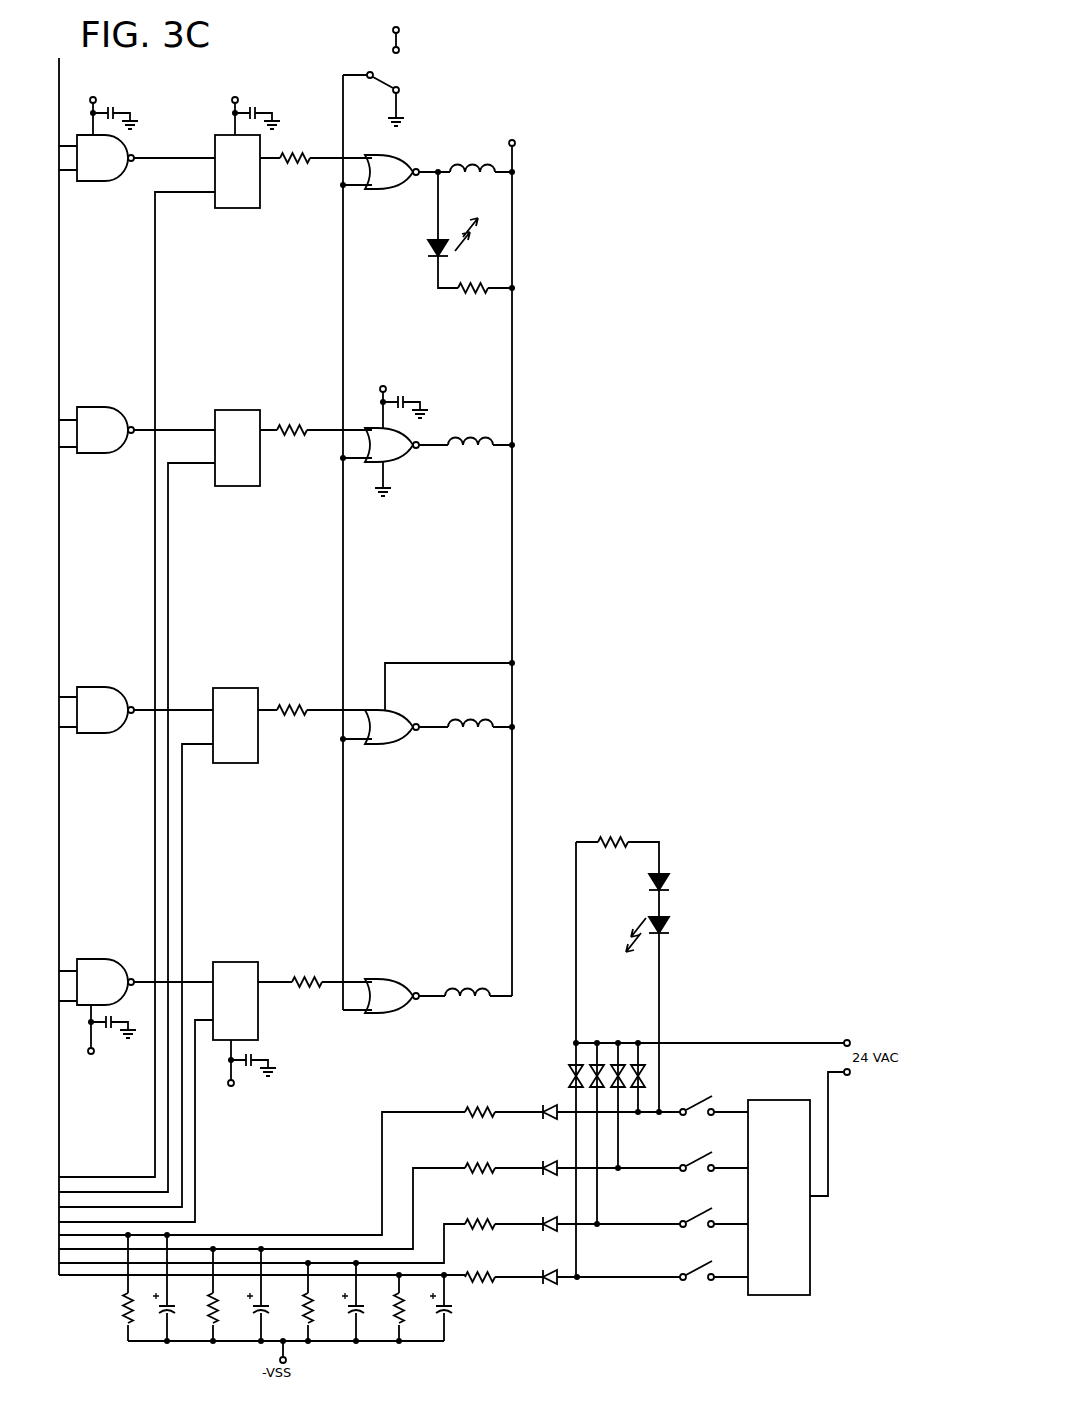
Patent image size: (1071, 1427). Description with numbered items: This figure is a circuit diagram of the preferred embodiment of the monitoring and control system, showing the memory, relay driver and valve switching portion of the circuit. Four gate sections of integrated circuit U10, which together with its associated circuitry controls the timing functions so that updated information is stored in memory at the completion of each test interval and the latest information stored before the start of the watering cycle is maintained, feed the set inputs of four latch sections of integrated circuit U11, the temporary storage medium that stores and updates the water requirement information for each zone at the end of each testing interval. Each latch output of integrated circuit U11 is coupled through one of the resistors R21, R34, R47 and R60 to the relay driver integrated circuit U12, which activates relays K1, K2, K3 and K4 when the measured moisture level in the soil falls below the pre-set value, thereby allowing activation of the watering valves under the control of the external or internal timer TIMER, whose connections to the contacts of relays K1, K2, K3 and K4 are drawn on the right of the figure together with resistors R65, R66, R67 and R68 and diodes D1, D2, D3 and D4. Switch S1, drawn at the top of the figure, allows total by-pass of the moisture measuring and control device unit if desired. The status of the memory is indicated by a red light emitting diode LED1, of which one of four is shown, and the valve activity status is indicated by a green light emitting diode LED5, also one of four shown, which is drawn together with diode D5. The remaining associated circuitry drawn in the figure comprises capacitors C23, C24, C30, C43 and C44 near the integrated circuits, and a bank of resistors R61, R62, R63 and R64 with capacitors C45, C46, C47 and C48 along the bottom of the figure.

The integrated circuit U10 is at (137, 583).
The integrated circuit U11 is at (180, 678).
The relay driver integrated circuit U12 is at (427, 583).
The capacitor C23 is at (110, 104).
The capacitor C24 is at (252, 107).
The capacitor C30 is at (400, 398).
The capacitor C43 is at (109, 1034).
The capacitor C44 is at (252, 1065).
The resistor 1K R21 is at (316, 144).
The resistor 1K R34 is at (316, 410).
The resistor 1K R47 is at (315, 690).
The resistor 1K R60 is at (315, 964).
The switch S1 is at (387, 68).
The relay K1 is at (583, 713).
The relay K2 is at (583, 822).
The relay K3 is at (583, 931).
The relay K4 is at (583, 1040).
The red light emitting diode LED1 is at (501, 242).
The green light emitting diode LED5 is at (670, 1014).
The diode D5 is at (675, 867).
The diode D1 is at (547, 1102).
The diode D2 is at (552, 1159).
The diode D3 is at (553, 1214).
The diode D4 is at (553, 1267).
The resistor 2.2M R65 is at (504, 1094).
The resistor 2.2M R66 is at (504, 1149).
The resistor 2.2M R67 is at (504, 1205).
The resistor 2.2M R68 is at (504, 1256).
The resistor 1M R61 is at (142, 1286).
The resistor 1M R62 is at (227, 1293).
The resistor 1M R63 is at (322, 1300).
The resistor 1M R64 is at (413, 1306).
The capacitor 2.2 C45 is at (176, 1286).
The capacitor 2.2 C46 is at (270, 1293).
The capacitor 2.2 C47 is at (365, 1300).
The capacitor 2.2 C48 is at (453, 1306).
The timer TIMER is at (803, 1182).